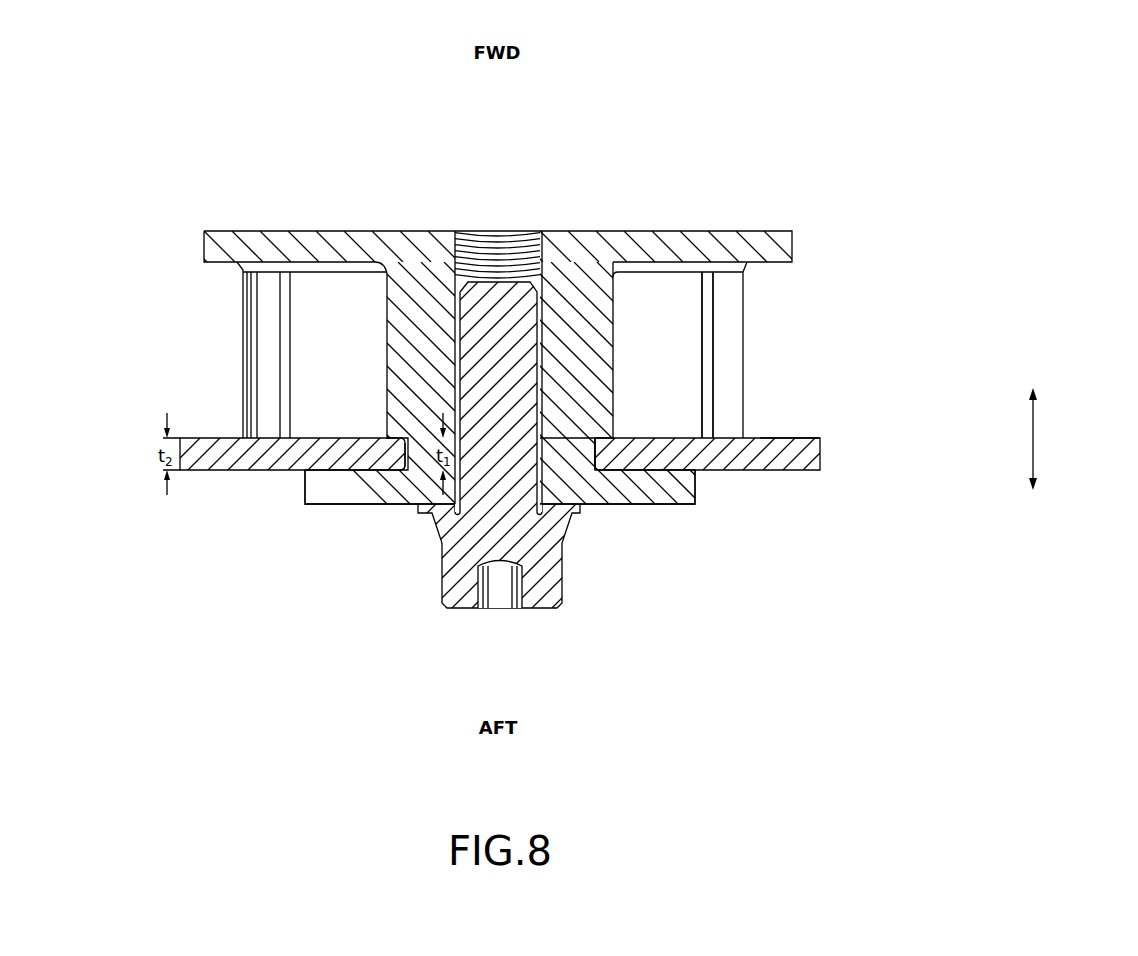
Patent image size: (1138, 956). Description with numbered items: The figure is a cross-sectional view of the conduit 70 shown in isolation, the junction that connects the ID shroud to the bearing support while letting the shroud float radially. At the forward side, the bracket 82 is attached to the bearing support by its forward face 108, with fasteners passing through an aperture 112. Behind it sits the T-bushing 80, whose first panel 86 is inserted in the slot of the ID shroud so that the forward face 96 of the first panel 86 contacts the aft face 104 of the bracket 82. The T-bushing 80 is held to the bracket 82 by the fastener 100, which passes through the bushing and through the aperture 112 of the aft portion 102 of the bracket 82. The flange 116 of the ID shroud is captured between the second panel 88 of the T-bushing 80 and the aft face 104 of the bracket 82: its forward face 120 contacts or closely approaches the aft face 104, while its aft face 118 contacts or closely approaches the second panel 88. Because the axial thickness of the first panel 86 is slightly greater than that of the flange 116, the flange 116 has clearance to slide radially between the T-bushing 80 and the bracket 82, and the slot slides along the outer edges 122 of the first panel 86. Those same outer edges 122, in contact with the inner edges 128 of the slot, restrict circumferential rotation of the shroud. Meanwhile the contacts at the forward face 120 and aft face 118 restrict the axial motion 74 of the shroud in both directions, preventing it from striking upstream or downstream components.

The conduit 70 is at (880, 211).
The axial motion 74 is at (1033, 440).
The T-bushing 80 is at (363, 490).
The bracket 82 is at (695, 315).
The first panel 86 is at (388, 435).
The second panel 88 is at (655, 495).
The forward face 96 is at (590, 445).
The fastener 100 is at (508, 328).
The aft portion 102 is at (728, 326).
The aft face 104 is at (745, 437).
The forward face 108 is at (640, 231).
The aperture 112 is at (490, 252).
The flange 116 is at (212, 466).
The aft face 118 is at (788, 472).
The forward face 120 is at (800, 438).
The outer edges 122 is at (612, 441).
The inner edges 128 is at (388, 472).